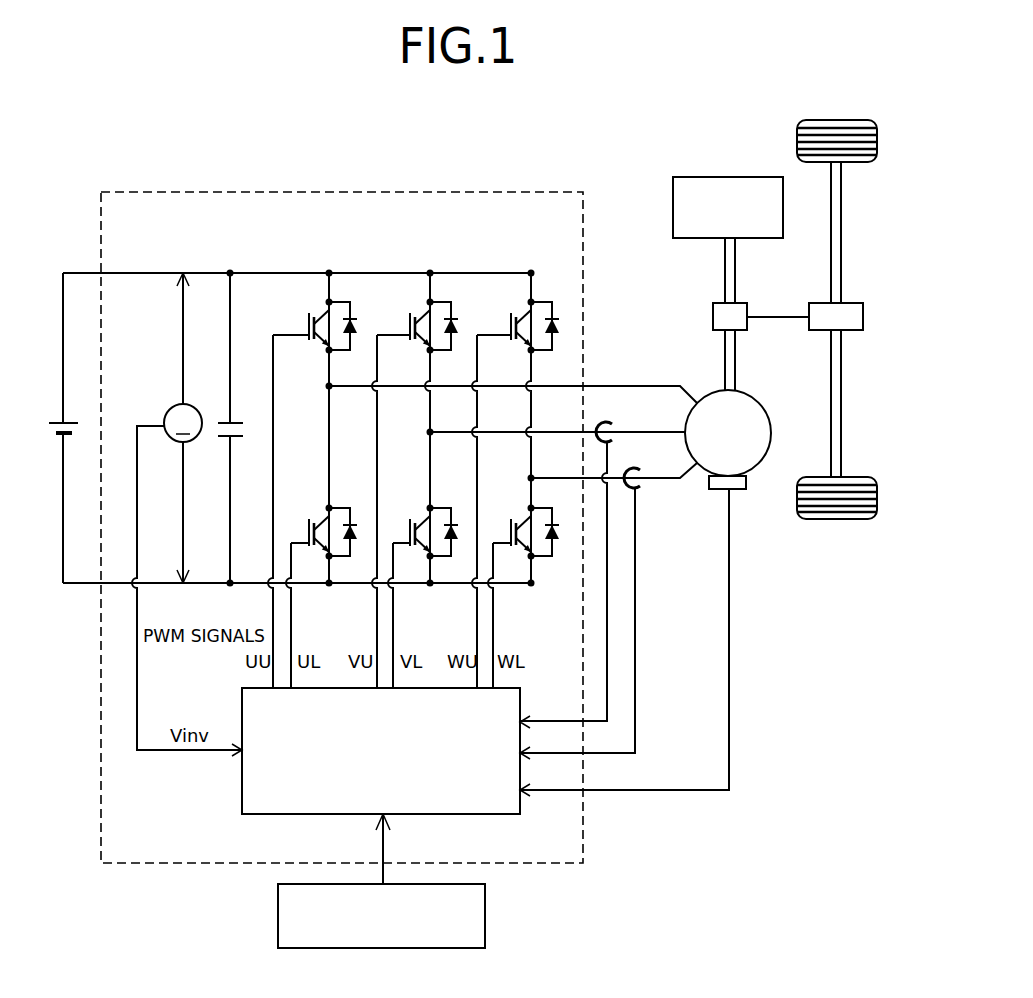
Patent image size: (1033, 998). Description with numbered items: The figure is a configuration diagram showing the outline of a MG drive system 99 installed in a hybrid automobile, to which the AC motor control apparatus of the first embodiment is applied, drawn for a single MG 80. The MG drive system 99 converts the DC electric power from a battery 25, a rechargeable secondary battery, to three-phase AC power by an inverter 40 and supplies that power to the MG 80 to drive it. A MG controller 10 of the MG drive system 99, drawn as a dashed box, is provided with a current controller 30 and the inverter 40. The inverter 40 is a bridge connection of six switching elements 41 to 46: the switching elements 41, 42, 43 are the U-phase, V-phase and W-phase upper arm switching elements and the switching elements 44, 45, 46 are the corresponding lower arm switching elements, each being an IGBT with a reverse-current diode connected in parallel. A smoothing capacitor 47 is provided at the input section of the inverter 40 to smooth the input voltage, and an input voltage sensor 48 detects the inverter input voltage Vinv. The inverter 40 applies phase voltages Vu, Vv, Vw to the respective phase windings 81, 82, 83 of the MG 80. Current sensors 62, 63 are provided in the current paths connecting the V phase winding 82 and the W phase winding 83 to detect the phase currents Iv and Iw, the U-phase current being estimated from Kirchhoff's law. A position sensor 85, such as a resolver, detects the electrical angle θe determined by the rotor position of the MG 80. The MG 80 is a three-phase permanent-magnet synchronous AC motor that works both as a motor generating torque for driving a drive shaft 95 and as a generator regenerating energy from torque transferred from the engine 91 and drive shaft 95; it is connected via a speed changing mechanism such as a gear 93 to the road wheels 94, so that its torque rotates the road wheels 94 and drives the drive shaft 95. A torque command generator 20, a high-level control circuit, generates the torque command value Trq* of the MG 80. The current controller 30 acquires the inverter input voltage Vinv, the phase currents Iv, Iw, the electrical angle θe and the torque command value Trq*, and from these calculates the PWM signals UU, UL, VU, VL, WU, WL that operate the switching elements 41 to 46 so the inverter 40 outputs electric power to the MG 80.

The MG controller 10 is at (412, 190).
The torque command generator 20 is at (278, 918).
The battery 25 is at (58, 420).
The current controller 30 is at (241, 800).
The inverter 40 is at (347, 258).
The U-phase upper arm switching element 41 is at (323, 313).
The V-phase upper arm switching element 42 is at (424, 313).
The W-phase upper arm switching element 43 is at (525, 313).
The U-phase lower arm switching element 44 is at (325, 517).
The V-phase lower arm switching element 45 is at (426, 517).
The W-phase lower arm switching element 46 is at (527, 517).
The smoothing capacitor 47 is at (238, 420).
The input voltage sensor 48 is at (173, 407).
The current sensor 62 is at (610, 419).
The current sensor 63 is at (633, 467).
The MG 80 is at (768, 417).
The U phase winding 81 is at (652, 386).
The V phase winding 82 is at (658, 432).
The W phase winding 83 is at (664, 482).
The position sensor 85 is at (738, 490).
The engine 91 is at (673, 203).
The gear 93 is at (820, 330).
The road wheels 94 is at (831, 260).
The drive shaft 95 is at (797, 140).
The MG drive system 99 is at (607, 164).